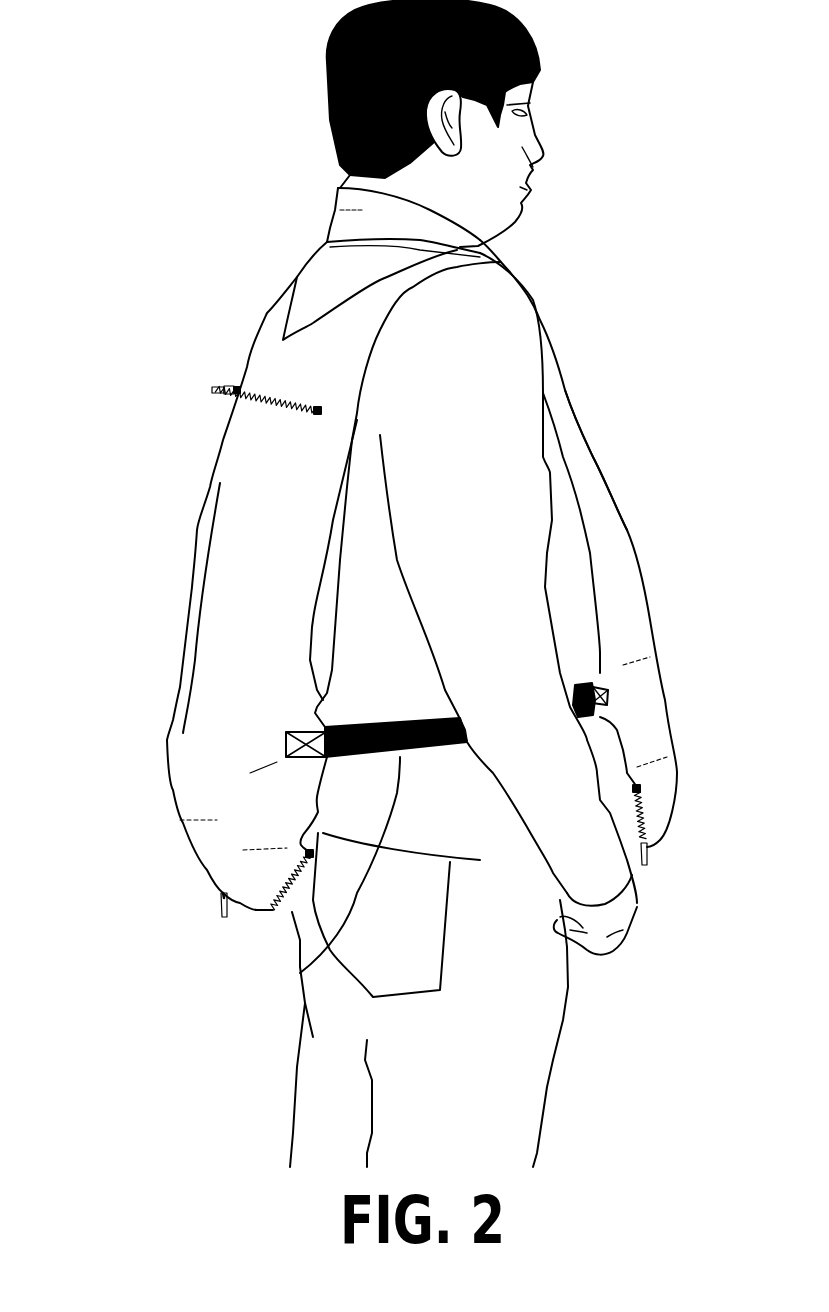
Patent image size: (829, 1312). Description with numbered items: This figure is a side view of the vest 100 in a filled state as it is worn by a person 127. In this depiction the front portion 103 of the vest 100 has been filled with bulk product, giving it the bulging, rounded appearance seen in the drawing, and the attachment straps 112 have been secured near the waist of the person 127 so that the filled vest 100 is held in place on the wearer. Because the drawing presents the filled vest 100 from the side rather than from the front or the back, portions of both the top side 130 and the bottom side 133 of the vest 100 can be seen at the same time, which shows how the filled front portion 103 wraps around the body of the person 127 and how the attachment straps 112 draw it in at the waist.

The vest 100 is at (417, 626).
The front portion 103 is at (622, 603).
The attachment straps 112 is at (300, 973).
The person 127 is at (515, 1027).
The top side 130 is at (590, 503).
The bottom side 133 is at (563, 520).